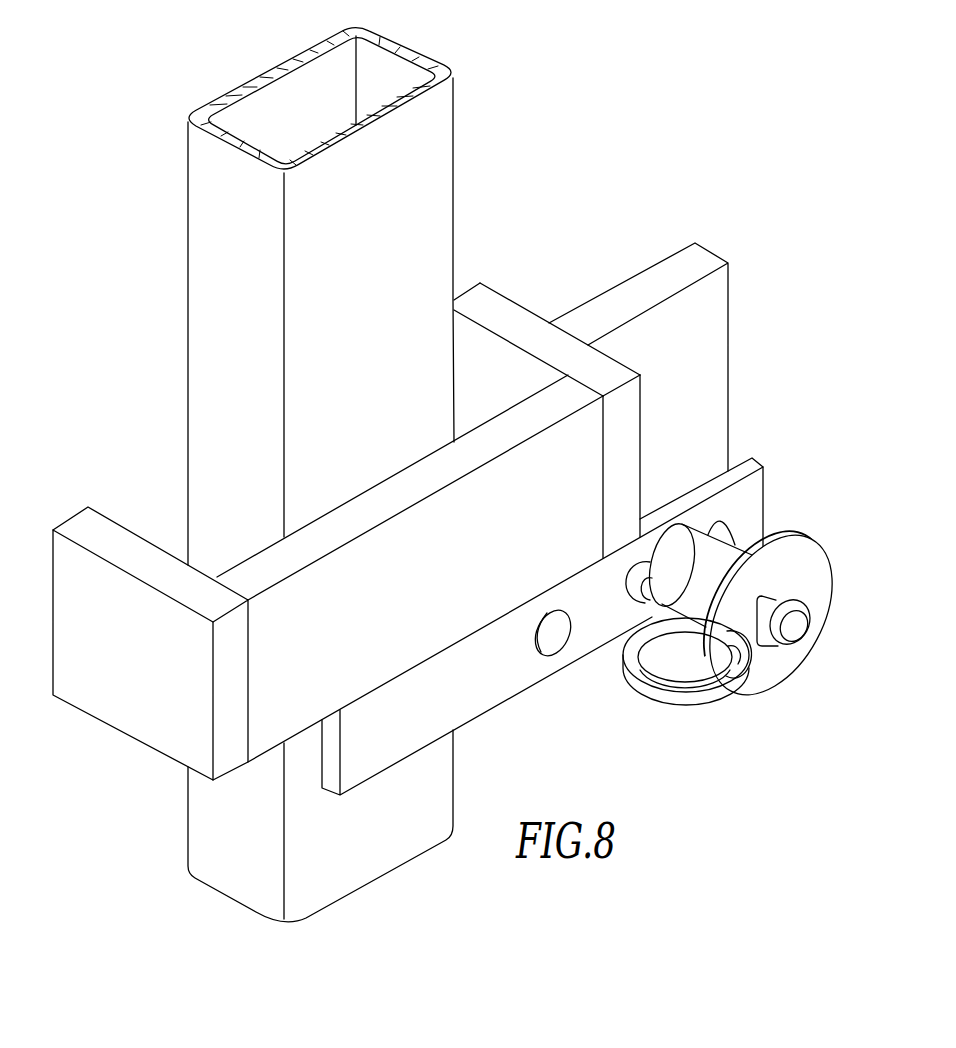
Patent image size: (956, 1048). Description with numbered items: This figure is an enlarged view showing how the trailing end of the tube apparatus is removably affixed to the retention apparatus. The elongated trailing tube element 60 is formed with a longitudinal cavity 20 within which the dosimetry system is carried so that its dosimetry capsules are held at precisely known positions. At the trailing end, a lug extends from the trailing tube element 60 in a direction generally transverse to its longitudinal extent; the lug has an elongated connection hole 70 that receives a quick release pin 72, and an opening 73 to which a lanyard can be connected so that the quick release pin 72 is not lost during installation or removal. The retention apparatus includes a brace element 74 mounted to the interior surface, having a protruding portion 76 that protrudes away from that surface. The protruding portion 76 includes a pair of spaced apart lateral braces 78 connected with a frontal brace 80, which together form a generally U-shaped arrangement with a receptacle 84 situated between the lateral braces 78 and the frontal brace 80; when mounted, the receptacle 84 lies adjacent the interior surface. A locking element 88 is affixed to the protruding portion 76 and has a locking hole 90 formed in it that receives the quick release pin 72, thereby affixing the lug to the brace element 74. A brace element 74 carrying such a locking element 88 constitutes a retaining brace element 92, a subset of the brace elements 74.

The longitudinal cavity 20 is at (397, 62).
The trailing tube element 60 is at (455, 133).
The brace element 74 is at (493, 284).
The retaining brace element 92 is at (518, 302).
The protruding portion 76 is at (543, 312).
The locking element 88 is at (665, 274).
The lateral braces 78 is at (642, 398).
The receptacle 84 is at (155, 520).
The frontal brace 80 is at (298, 735).
The opening 73 is at (538, 627).
The connection hole 70 is at (636, 598).
The locking hole 90 is at (650, 582).
The quick release pin 72 is at (742, 540).